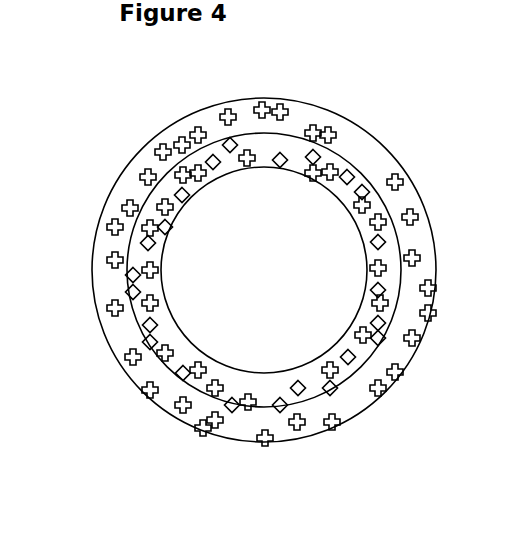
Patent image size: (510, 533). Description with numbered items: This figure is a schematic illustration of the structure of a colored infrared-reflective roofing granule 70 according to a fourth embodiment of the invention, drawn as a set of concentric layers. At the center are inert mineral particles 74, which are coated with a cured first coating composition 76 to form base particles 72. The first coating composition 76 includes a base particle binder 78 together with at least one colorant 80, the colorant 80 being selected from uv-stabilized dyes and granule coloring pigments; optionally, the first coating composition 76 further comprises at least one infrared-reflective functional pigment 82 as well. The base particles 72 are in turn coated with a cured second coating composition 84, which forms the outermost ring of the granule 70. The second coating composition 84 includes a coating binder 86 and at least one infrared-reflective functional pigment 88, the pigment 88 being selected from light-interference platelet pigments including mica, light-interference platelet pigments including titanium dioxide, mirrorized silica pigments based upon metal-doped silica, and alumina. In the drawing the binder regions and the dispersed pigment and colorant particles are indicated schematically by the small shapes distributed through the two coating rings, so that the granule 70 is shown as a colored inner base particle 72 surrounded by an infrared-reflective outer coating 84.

The colored infrared-reflective roofing granule 70 is at (178, 114).
The base particles 72 is at (92, 117).
The inert mineral particles 74 is at (238, 230).
The cured first coating composition 76 is at (192, 203).
The base particle binder 78 is at (143, 233).
The colorant 80 is at (125, 314).
The infrared-reflective functional pigment 82 is at (130, 358).
The cured second coating composition 84 is at (143, 379).
The coating binder 86 is at (158, 412).
The infrared-reflective functional pigment 88 is at (198, 432).